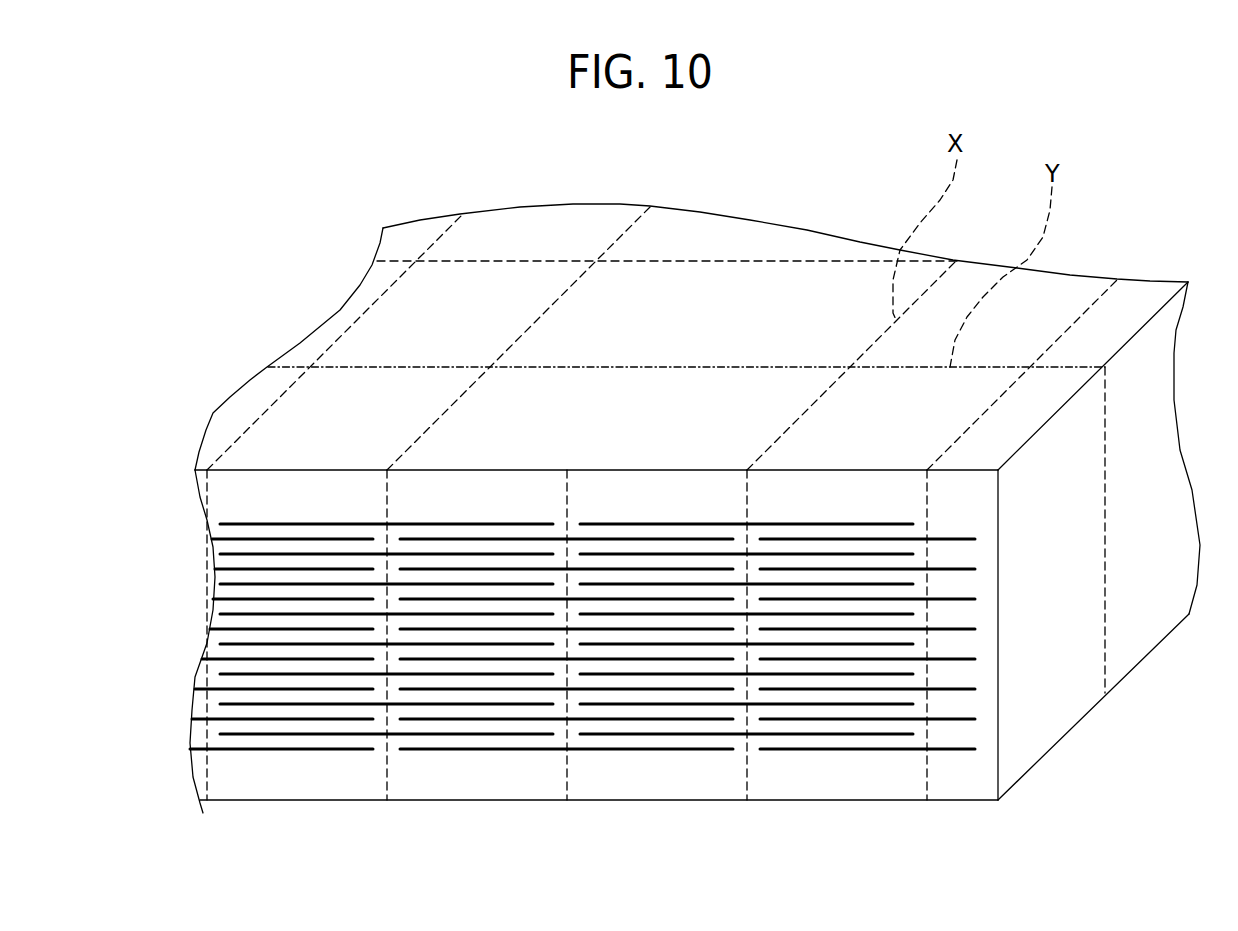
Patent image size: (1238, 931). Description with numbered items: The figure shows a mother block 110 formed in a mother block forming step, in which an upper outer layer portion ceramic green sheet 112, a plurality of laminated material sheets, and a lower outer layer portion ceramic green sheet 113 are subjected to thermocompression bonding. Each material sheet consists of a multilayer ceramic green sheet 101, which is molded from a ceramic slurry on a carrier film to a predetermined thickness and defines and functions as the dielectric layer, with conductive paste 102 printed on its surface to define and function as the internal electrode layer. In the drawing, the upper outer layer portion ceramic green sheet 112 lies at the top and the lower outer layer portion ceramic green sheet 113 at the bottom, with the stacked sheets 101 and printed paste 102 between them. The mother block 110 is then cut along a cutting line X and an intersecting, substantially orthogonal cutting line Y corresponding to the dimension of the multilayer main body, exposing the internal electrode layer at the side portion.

The mother block 110 is at (695, 464).
The upper outer layer portion ceramic green sheet 112 is at (551, 490).
The lower outer layer portion ceramic green sheet 113 is at (551, 784).
The multilayer ceramic green sheet 101 is at (566, 700).
The conductive paste 102 is at (582, 707).